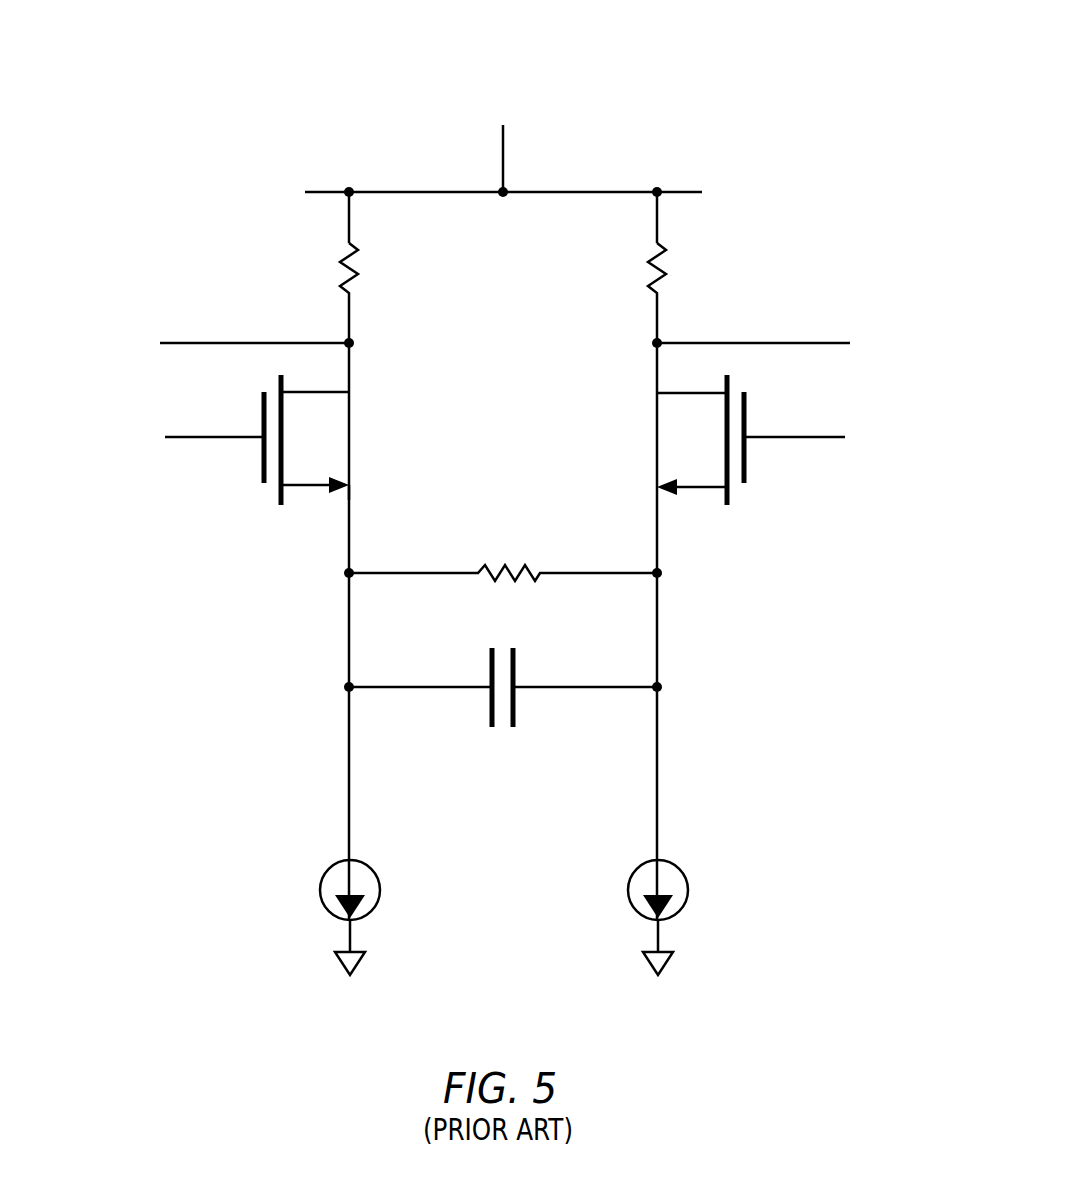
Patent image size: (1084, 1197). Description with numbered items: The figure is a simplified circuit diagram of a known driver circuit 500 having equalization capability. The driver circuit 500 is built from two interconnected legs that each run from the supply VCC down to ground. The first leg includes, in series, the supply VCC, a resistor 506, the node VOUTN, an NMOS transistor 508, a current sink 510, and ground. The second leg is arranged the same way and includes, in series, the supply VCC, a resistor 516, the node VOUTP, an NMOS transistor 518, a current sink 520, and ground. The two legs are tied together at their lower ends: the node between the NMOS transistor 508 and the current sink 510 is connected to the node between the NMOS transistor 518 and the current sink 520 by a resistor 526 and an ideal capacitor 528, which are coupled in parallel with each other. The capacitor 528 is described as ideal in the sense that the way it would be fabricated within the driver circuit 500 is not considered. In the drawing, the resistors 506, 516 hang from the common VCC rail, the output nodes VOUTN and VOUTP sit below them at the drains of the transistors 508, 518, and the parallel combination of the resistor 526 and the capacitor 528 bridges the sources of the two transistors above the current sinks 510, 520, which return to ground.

The driver circuit 500 is at (795, 90).
The resistor 506 is at (350, 268).
The NMOS transistor 508 is at (320, 393).
The current sink 510 is at (380, 880).
The resistor 516 is at (656, 272).
The NMOS transistor 518 is at (665, 393).
The current sink 520 is at (629, 893).
The resistor 526 is at (512, 573).
The ideal capacitor 528 is at (516, 668).